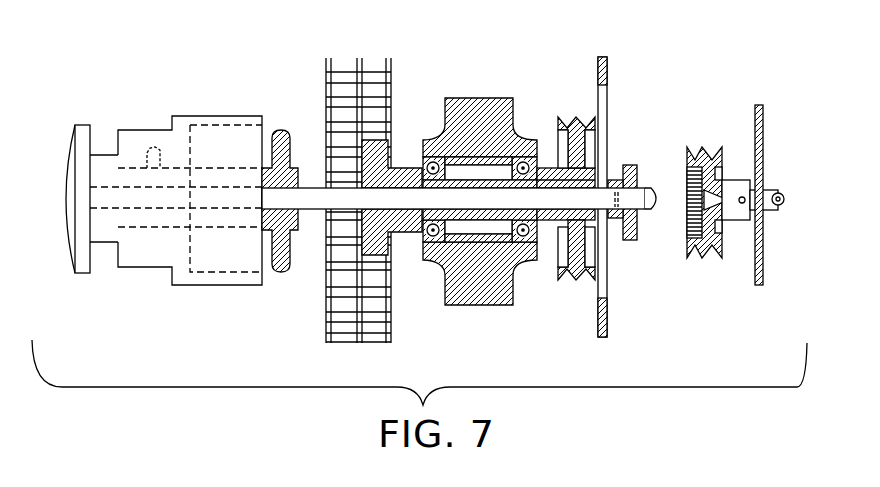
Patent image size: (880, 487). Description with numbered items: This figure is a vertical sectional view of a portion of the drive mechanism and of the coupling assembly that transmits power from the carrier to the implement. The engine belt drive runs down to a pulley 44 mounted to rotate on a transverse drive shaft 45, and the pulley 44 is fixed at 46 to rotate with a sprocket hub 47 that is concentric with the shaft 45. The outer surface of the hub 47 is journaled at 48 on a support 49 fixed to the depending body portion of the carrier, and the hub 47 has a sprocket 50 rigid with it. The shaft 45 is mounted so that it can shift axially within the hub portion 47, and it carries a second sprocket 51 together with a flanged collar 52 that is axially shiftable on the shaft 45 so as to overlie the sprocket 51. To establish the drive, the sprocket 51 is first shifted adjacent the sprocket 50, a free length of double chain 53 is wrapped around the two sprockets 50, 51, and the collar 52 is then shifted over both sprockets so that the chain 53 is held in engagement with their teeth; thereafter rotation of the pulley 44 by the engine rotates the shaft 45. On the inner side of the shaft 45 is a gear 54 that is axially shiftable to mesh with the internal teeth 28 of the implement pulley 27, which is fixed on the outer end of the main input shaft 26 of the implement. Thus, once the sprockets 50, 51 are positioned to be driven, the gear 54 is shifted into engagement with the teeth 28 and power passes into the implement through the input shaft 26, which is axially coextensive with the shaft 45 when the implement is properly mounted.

The flanged collar 52 is at (229, 117).
The second sprocket 51 is at (292, 140).
The double chain 53 is at (388, 75).
The sprocket 50 is at (377, 140).
The sprocket hub 47 is at (457, 180).
The support 49 is at (515, 293).
The journal 48 is at (543, 168).
The pulley 44 is at (586, 110).
The fixing 46 is at (590, 167).
The transverse drive shaft 45 is at (601, 198).
The gear 54 is at (637, 181).
The internal teeth 28 is at (690, 228).
The pulley 27 is at (737, 187).
The main input shaft 26 is at (768, 190).